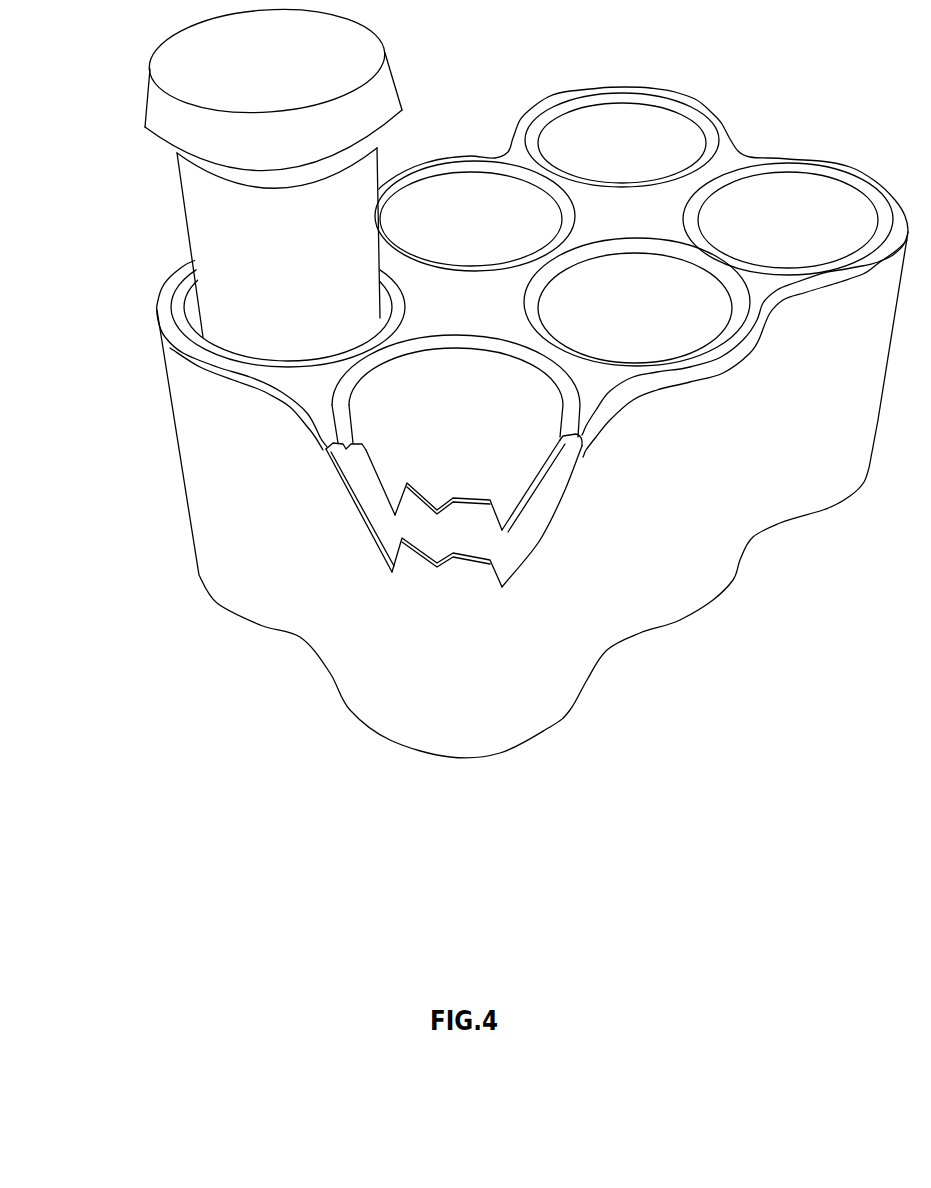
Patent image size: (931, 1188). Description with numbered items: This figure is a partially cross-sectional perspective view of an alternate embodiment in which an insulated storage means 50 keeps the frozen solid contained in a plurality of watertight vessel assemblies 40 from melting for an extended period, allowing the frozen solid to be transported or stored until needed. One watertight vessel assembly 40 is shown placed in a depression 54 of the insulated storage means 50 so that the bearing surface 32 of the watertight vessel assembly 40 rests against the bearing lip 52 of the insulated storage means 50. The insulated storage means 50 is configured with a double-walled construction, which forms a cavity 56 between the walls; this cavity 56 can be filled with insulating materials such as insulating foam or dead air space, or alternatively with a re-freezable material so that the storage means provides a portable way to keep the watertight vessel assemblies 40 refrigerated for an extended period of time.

The bearing surface 32 is at (155, 143).
The water-tight vessel assembly 40 is at (174, 214).
The insulated storage means 50 is at (167, 460).
The bearing lip 52 is at (623, 92).
The depression 54 is at (632, 143).
The cavity 56 is at (383, 518).